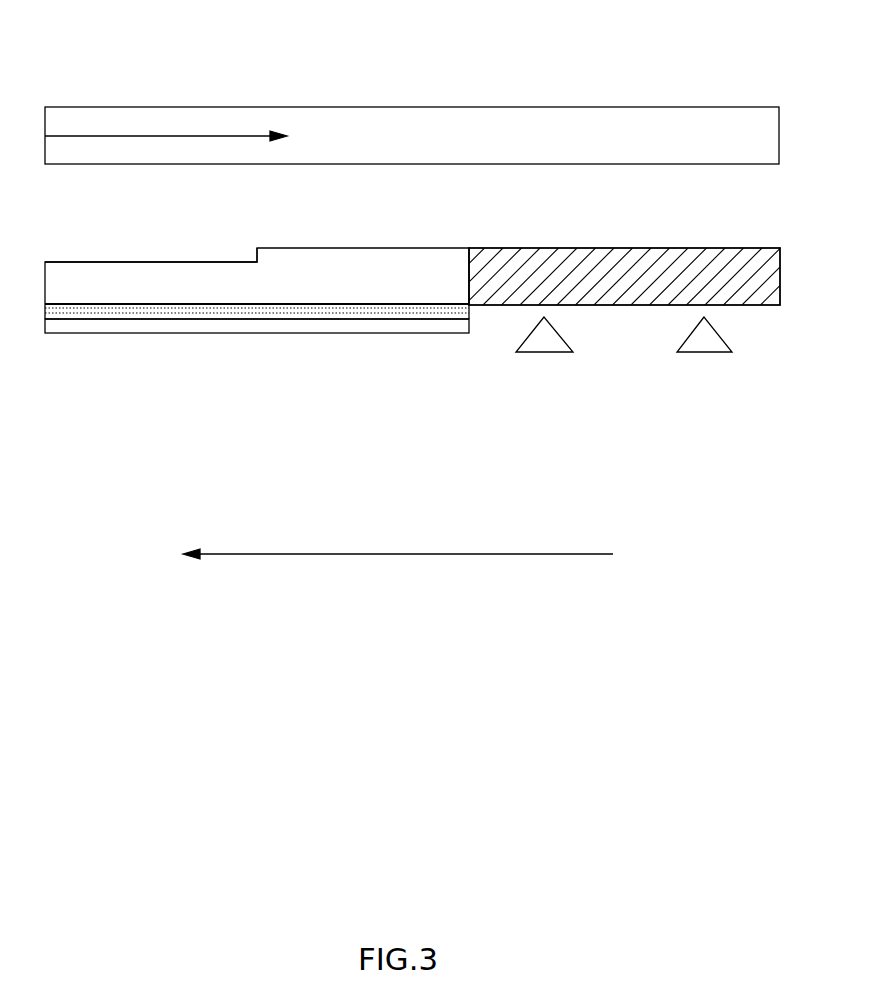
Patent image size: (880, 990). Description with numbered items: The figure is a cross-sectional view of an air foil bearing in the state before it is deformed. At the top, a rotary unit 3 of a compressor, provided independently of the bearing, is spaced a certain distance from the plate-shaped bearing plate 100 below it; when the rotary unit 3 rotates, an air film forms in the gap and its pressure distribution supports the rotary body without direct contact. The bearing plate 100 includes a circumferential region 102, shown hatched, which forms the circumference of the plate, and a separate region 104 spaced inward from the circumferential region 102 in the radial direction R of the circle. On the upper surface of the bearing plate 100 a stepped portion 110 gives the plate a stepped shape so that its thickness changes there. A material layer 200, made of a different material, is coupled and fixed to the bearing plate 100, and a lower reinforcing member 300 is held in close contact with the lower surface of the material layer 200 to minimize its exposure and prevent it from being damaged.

The rotary unit 3 is at (465, 132).
The bearing plate 100 is at (440, 371).
The circumferential region 102 is at (425, 428).
The separate region 104 is at (417, 280).
The stepped portion 110 is at (258, 263).
The material layer 200 is at (70, 312).
The lower reinforcing member 300 is at (103, 334).
The radial direction R is at (385, 555).